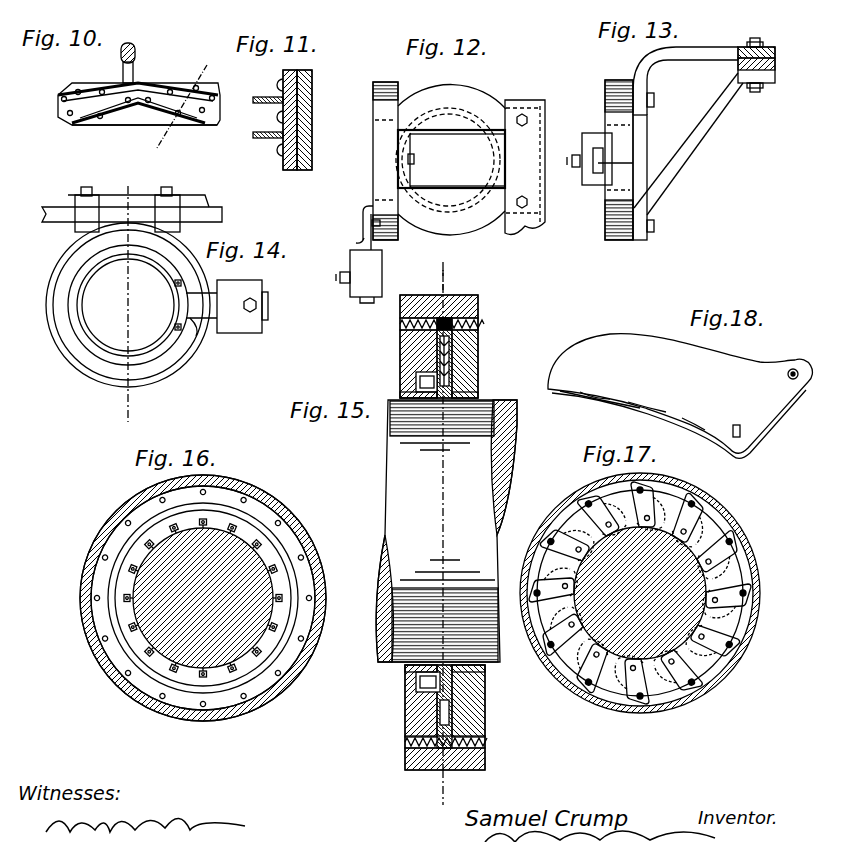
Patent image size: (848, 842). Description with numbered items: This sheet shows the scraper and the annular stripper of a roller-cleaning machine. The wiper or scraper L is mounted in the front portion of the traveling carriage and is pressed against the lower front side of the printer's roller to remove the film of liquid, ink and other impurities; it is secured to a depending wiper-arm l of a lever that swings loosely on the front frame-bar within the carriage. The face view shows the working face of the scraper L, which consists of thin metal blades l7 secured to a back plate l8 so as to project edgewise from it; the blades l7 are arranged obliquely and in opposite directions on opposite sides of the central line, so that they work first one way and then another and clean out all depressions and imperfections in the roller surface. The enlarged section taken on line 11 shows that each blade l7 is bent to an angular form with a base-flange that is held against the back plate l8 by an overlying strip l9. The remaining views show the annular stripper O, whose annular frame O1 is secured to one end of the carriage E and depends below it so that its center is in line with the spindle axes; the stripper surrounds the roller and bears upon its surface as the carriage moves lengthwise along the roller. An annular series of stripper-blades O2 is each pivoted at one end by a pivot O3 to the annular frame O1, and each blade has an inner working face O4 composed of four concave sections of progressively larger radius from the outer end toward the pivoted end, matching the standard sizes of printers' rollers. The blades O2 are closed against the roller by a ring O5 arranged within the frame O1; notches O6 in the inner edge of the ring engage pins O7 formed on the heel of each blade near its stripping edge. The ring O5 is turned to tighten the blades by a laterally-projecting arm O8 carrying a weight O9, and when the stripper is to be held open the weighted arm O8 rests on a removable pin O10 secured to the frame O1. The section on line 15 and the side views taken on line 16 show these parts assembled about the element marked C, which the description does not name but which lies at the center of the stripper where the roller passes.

In FIG. 10, the wiper L is at (139, 88).
In FIG. 11, the wiper L is at (310, 120).
In FIG. 10, the wiper-arm l is at (122, 61).
In FIG. 10, the blades l7 is at (62, 101).
In FIG. 11, the blades l7 is at (264, 114).
In FIG. 10, the back plate l8 is at (144, 134).
In FIG. 11, the back plate l8 is at (312, 120).
In FIG. 10, the overlying strip l9 is at (68, 89).
In FIG. 11, the overlying strip l9 is at (275, 104).
In FIG. 10, the section line 11 is at (185, 105).
In FIG. 14, the section line 15 is at (129, 302).
In FIG. 12, the section line 16 is at (443, 271).
In FIG. 15, the section line 16 is at (438, 547).
In FIG. 12, the annular stripper O is at (445, 160).
In FIG. 13, the annular stripper O is at (605, 160).
In FIG. 12, the annular frame O1 is at (385, 161).
In FIG. 13, the annular frame O1 is at (626, 149).
In FIG. 14, the annular frame O1 is at (60, 278).
In FIG. 15, the annular frame O1 is at (475, 318).
In FIG. 16, the annular frame O1 is at (100, 538).
In FIG. 17, the annular frame O1 is at (765, 567).
In FIG. 15, the stripper-blades O2 is at (455, 356).
In FIG. 17, the stripper-blades O2 is at (672, 500).
In FIG. 18, the stripper-blades O2 is at (680, 396).
In FIG. 15, the pivot O3 is at (479, 325).
In FIG. 16, the pivot O3 is at (280, 522).
In FIG. 17, the pivot O3 is at (562, 516).
In FIG. 18, the working faces O4 is at (642, 400).
In FIG. 14, the ring O5 is at (70, 310).
In FIG. 15, the ring O5 is at (400, 366).
In FIG. 16, the ring O5 is at (120, 578).
In FIG. 15, the notches O6 is at (416, 382).
In FIG. 16, the notches O6 is at (210, 591).
In FIG. 15, the pins O7 is at (420, 402).
In FIG. 16, the pins O7 is at (172, 536).
In FIG. 17, the pins O7 is at (735, 666).
In FIG. 18, the pins O7 is at (737, 424).
In FIG. 12, the laterally-projecting arm O8 is at (362, 226).
In FIG. 13, the laterally-projecting arm O8 is at (628, 164).
In FIG. 14, the laterally-projecting arm O8 is at (270, 305).
In FIG. 12, the weight O9 is at (359, 276).
In FIG. 13, the weight O9 is at (598, 183).
In FIG. 14, the weight O9 is at (236, 350).
In FIG. 12, the removable pin O10 is at (357, 242).
In FIG. 14, the removable pin O10 is at (200, 345).
In FIG. 13, the carriage E is at (776, 63).
In FIG. 15, the cylinder C is at (446, 531).
In FIG. 16, the cylinder C is at (203, 598).
In FIG. 17, the cylinder C is at (640, 593).